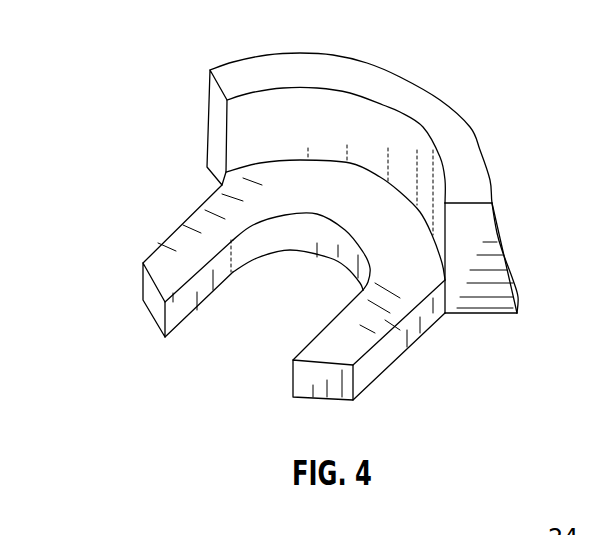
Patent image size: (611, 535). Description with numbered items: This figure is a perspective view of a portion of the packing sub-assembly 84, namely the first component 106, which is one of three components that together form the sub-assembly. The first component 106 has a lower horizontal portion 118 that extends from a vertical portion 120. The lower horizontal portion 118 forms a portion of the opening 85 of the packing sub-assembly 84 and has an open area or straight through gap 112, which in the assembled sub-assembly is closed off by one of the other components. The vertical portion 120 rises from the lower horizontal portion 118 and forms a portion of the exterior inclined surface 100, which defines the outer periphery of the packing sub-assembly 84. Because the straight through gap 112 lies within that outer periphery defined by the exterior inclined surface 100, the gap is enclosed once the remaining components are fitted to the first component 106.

The packing sub-assembly 84 is at (167, 193).
The opening 85 is at (317, 214).
The exterior inclined surface 100 is at (500, 233).
The first component 106 is at (470, 103).
The straight through gap 112 is at (230, 372).
The lower horizontal portion 118 is at (352, 330).
The vertical portion 120 is at (377, 82).